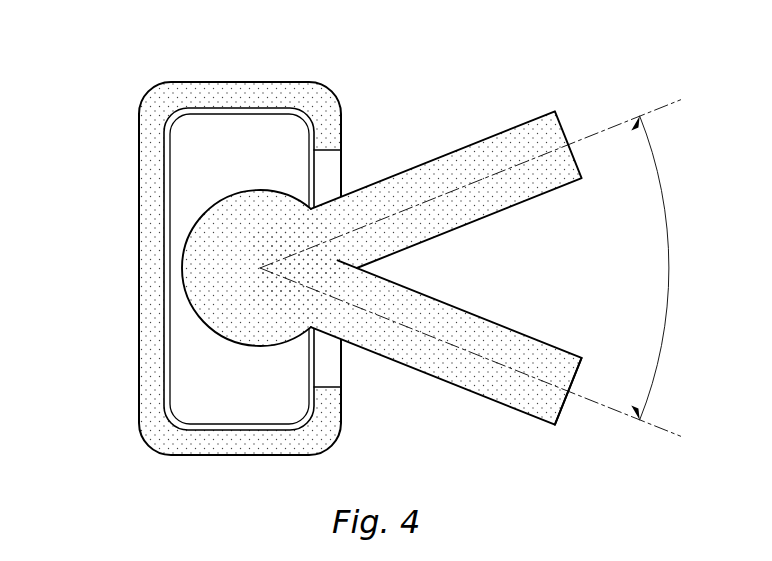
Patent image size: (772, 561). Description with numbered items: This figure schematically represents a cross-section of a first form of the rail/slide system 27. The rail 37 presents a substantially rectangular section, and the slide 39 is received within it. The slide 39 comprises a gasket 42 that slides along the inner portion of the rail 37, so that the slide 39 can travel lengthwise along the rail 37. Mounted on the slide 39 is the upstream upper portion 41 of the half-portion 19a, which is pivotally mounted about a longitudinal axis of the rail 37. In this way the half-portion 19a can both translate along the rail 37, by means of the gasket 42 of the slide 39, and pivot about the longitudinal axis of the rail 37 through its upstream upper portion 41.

The rail/slide system 27 is at (367, 251).
The rail 37 is at (203, 237).
The slide 39 is at (280, 210).
The upstream upper portion 41 is at (488, 340).
The gasket 42 is at (203, 155).
The half-portion 19a is at (532, 402).